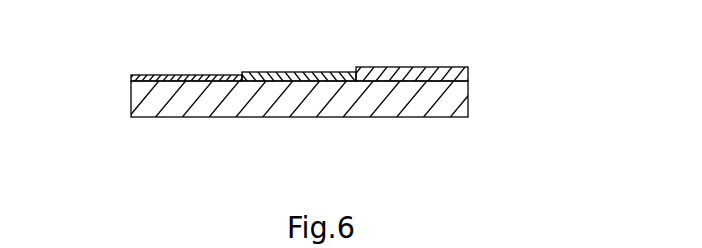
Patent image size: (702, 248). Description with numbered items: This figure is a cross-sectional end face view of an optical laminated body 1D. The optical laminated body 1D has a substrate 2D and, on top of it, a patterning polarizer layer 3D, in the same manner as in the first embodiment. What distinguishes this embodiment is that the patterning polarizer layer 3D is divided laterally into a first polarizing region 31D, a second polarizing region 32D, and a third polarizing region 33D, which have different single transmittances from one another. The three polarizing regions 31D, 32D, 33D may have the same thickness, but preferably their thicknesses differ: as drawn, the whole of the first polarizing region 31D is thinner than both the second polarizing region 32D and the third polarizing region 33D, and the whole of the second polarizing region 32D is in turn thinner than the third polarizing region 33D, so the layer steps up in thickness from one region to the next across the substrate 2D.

The optical laminated body 1D is at (478, 146).
The substrate 2D is at (181, 119).
The patterning polarizer layer 3D is at (471, 74).
The first polarizing region 31D is at (185, 76).
The second polarizing region 32D is at (300, 73).
The third polarizing region 33D is at (412, 68).